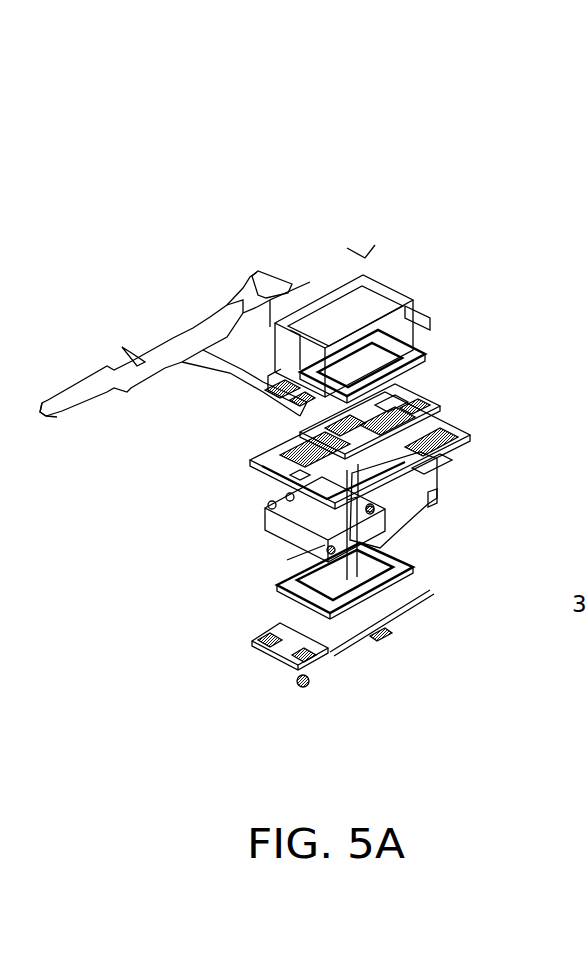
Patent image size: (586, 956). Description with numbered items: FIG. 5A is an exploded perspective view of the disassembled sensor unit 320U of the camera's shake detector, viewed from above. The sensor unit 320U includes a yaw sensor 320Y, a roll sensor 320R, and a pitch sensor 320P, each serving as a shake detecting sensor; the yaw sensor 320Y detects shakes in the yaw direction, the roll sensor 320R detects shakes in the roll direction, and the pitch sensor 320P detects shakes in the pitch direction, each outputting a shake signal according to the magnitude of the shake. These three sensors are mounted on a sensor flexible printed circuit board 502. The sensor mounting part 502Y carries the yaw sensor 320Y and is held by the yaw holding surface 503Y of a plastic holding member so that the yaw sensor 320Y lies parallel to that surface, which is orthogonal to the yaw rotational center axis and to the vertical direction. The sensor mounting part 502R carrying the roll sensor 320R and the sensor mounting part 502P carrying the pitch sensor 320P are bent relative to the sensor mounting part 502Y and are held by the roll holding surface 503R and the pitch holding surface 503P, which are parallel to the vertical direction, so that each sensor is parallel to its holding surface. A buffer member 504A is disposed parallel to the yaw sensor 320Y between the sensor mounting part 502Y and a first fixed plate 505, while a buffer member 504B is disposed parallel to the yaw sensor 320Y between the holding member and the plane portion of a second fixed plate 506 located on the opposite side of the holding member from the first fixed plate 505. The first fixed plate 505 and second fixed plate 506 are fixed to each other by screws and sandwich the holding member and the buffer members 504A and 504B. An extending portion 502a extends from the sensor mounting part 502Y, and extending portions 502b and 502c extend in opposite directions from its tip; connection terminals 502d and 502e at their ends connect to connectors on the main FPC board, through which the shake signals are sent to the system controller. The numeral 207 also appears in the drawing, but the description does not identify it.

The sensor flexible printed circuit (FPC) board 502 is at (185, 358).
The extending portion 502a is at (230, 372).
The extending portion 502b is at (243, 300).
The extending portion 502c is at (122, 347).
The connection terminal 502d is at (263, 268).
The connection terminal 502e is at (57, 417).
The sensor mounting part 502P is at (265, 444).
The sensor mounting part 502R is at (435, 458).
The sensor mounting part 502Y is at (390, 412).
The first fixed plate 505 is at (370, 297).
The sensor unit 320U is at (365, 258).
The buffer member 504A is at (407, 347).
The buffer member 504B is at (400, 600).
The yaw sensor 320Y is at (400, 385).
The roll sensor 320R is at (440, 445).
The pitch sensor 320P is at (283, 494).
The pitch holding surface 503P is at (300, 553).
The roll holding surface 503R is at (357, 487).
The yaw holding surface 503Y is at (360, 493).
The second fixed plate 506 is at (310, 628).
The posts 207 is at (305, 688).